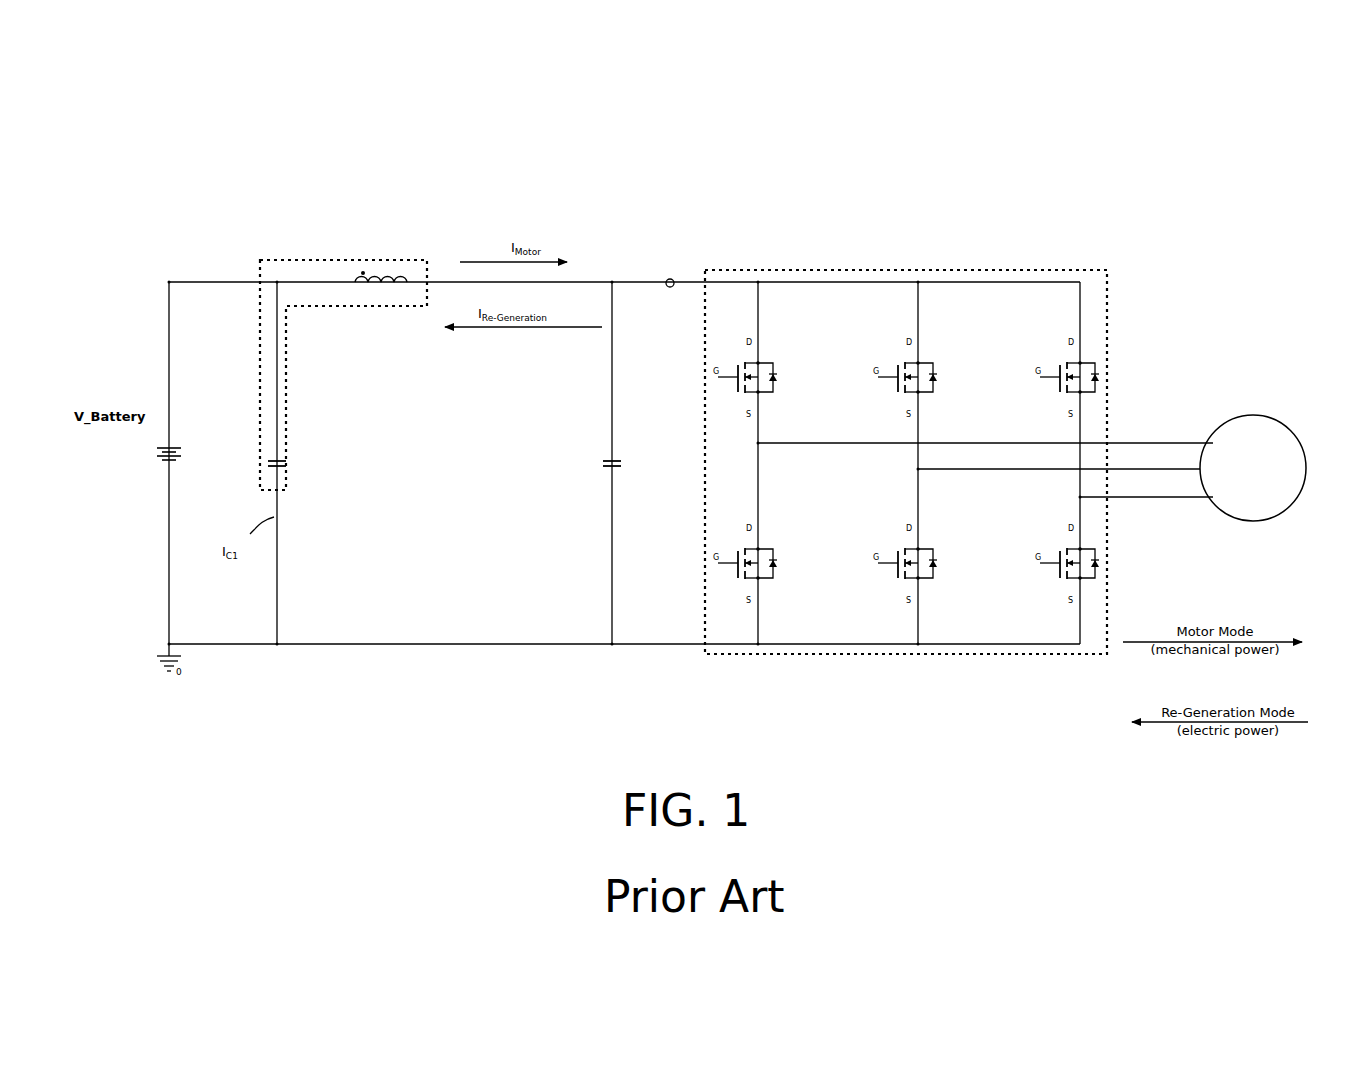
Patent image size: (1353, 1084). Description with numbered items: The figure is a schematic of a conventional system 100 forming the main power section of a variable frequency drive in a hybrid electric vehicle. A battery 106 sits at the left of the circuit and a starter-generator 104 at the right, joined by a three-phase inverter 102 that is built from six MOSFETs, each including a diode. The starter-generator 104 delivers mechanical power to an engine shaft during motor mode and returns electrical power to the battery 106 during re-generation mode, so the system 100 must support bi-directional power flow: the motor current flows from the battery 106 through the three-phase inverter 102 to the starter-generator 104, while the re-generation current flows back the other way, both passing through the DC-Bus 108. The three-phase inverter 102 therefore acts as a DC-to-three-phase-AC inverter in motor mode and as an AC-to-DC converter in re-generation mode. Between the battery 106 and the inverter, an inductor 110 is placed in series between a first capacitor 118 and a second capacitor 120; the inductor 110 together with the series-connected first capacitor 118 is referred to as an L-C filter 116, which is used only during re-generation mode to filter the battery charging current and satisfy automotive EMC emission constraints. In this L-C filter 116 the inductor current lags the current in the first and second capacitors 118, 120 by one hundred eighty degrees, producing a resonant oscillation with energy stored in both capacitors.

The system 100 is at (966, 132).
The three-phase inverter 102 is at (913, 268).
The starter-generator 104 is at (1238, 520).
The battery 106 is at (181, 444).
The DC-Bus 108 is at (670, 278).
The inductor 110 is at (362, 286).
The L-C filter 116 is at (260, 262).
The first capacitor 118 is at (272, 466).
The second capacitor 120 is at (616, 468).